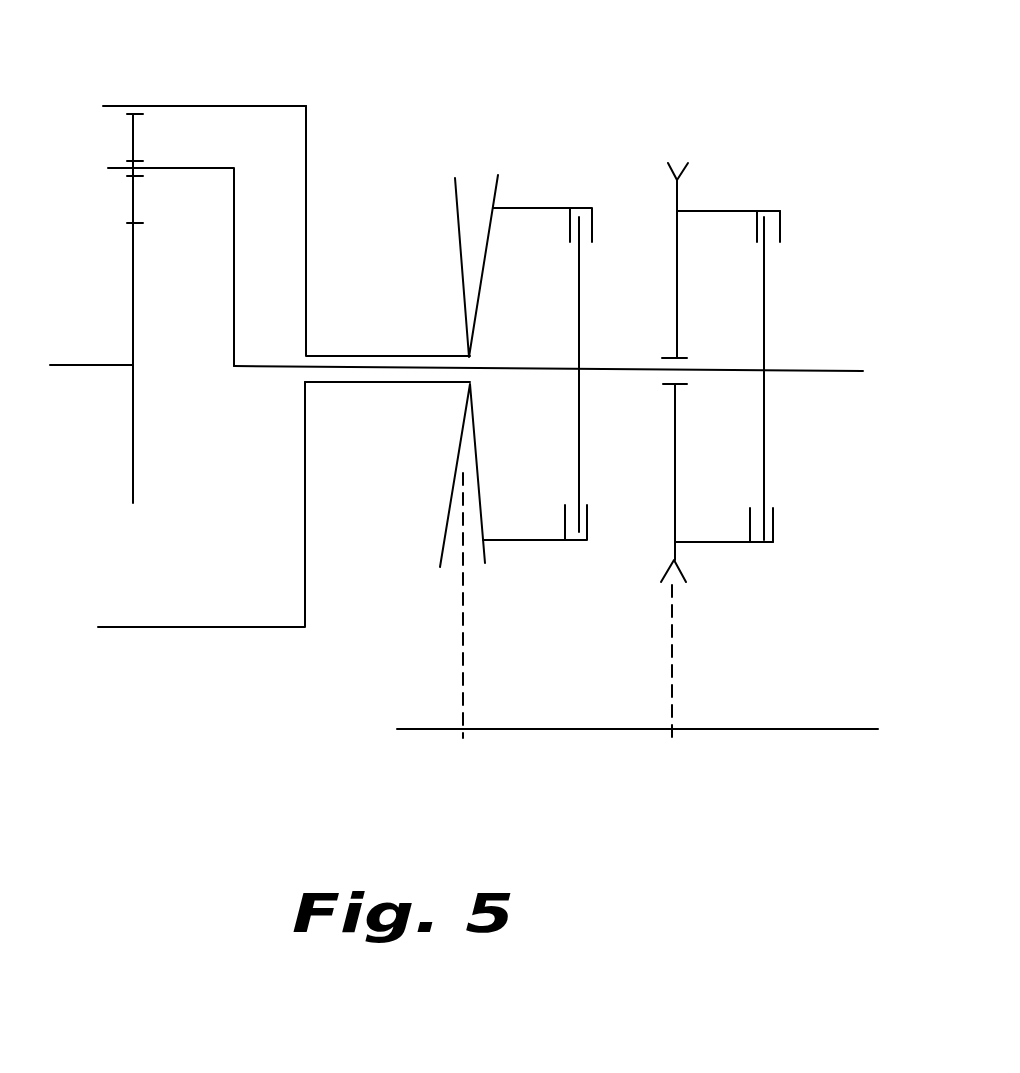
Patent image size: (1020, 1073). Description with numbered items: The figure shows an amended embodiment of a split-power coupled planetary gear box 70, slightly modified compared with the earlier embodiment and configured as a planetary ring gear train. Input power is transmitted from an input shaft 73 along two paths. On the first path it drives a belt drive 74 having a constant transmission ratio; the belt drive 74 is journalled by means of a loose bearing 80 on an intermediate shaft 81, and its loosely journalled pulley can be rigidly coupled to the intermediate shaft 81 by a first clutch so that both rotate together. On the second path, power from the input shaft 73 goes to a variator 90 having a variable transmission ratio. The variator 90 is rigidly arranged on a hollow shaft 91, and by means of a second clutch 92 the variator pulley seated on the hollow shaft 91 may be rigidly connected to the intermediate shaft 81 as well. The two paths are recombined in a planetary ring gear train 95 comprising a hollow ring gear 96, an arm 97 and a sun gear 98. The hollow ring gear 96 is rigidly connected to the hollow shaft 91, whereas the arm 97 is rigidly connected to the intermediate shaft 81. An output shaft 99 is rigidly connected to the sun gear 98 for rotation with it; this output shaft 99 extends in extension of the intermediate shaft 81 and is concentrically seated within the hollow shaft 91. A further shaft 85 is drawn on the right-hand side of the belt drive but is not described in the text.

The split-power coupled planetary gear box 70 is at (800, 115).
The input shaft 73 is at (810, 728).
The belt drive 74 is at (695, 183).
The loose bearing 80 is at (686, 355).
The intermediate shaft 81 is at (617, 366).
The shaft 85 is at (780, 222).
The variator 90 is at (429, 534).
The hollow shaft 91 is at (373, 355).
The second clutch 92 is at (592, 231).
The planetary ring gear train 95 is at (328, 141).
The hollow ring gear 96 is at (197, 103).
The arm 97 is at (188, 172).
The sun gear 98 is at (135, 293).
The output shaft 99 is at (70, 363).